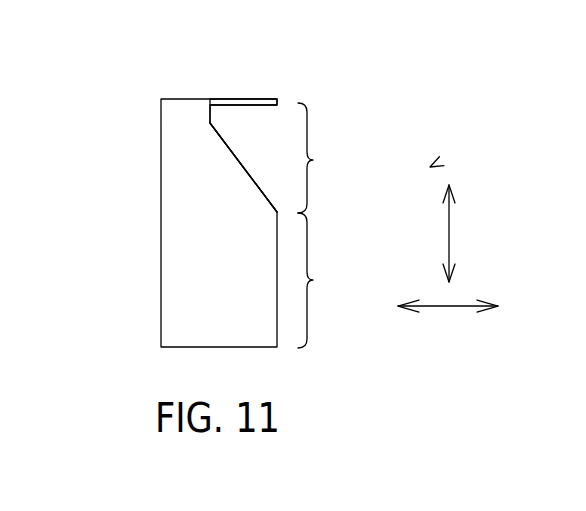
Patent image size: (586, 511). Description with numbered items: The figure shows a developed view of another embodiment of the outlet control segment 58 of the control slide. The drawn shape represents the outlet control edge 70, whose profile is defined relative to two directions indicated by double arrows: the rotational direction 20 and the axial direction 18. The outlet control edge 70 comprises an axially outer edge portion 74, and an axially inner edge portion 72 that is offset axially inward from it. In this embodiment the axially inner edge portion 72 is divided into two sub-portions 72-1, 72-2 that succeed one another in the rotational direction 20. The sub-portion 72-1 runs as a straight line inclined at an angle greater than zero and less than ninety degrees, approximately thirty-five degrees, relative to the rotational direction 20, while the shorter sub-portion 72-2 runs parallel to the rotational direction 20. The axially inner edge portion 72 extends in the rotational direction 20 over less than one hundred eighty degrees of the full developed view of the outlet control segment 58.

The outlet control edge 70 is at (248, 180).
The axially inner edge portion 72 is at (283, 158).
The first sub-portion 72-1 is at (232, 152).
The second sub-portion 72-2 is at (211, 106).
The axially outer edge portion 74 is at (278, 102).
The outlet control segment 58 is at (430, 167).
The rotational direction 20 is at (449, 245).
The axial direction 18 is at (460, 306).